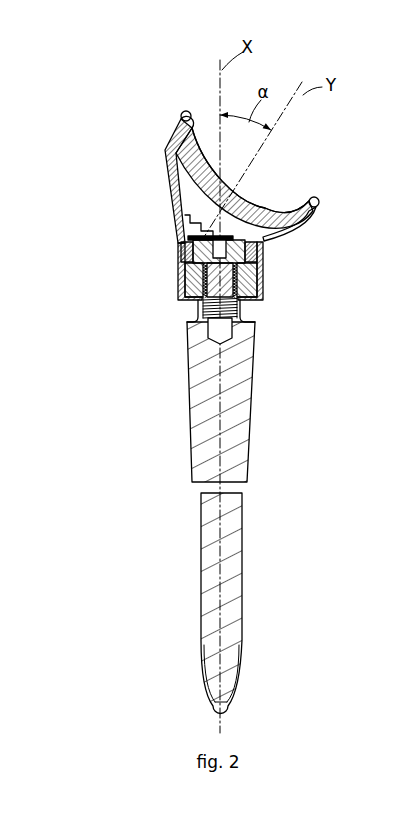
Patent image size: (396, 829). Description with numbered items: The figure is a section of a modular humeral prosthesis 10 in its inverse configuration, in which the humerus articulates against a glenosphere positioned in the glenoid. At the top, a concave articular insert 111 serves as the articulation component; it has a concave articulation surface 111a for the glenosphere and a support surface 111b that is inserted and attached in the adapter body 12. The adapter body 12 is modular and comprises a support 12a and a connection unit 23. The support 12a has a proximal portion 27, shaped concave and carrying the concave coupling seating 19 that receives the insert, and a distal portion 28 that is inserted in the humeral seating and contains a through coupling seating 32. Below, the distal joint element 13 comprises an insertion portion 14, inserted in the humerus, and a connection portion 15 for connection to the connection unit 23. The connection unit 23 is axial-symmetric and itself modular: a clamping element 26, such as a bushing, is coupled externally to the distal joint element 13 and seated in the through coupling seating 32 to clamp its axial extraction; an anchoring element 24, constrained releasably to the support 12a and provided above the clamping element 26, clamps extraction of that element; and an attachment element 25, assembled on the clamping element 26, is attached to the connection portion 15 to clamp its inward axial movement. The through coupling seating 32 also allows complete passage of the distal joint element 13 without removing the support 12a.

The modular humeral prosthesis 10 is at (78, 201).
The adapter body 12 is at (174, 278).
The support 12a is at (180, 217).
The distal joint element 13 is at (266, 439).
The insertion portion 14 is at (188, 413).
The connection portion 15 is at (186, 326).
The coupling seating 19 is at (168, 147).
The connection unit 23 is at (181, 310).
The anchoring element 24 is at (182, 252).
The attachment element 25 is at (259, 254).
The clamping element 26 is at (262, 285).
The proximal portion 27 is at (306, 227).
The distal portion 28 is at (262, 277).
The through coupling seating 32 is at (248, 306).
The concave articular insert 111 is at (306, 192).
The concave articulation surface 111a is at (253, 198).
The support surface 111b is at (173, 132).